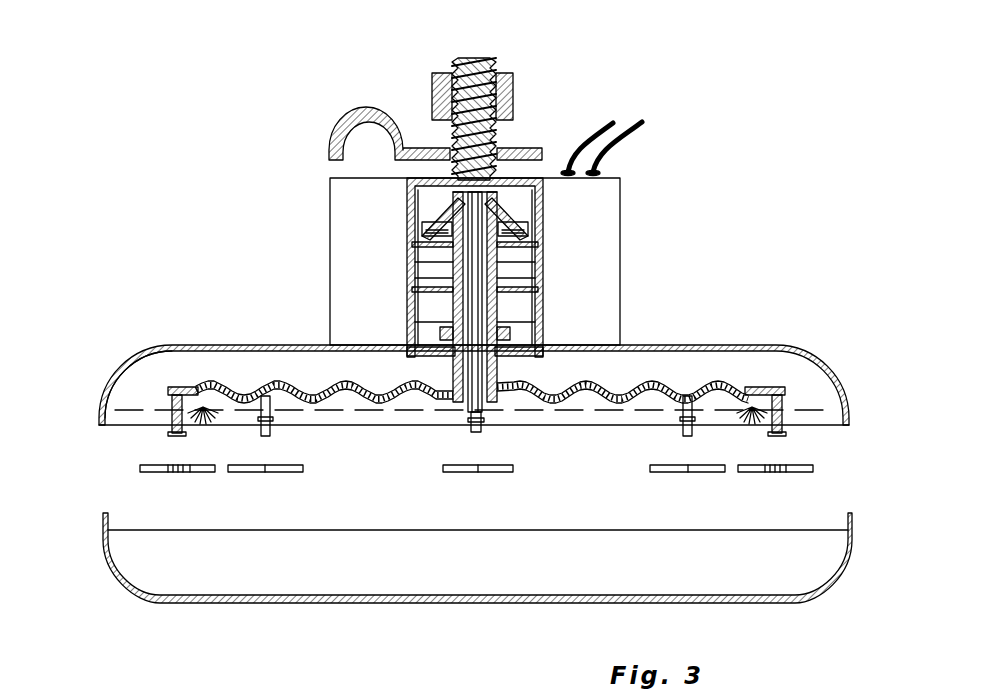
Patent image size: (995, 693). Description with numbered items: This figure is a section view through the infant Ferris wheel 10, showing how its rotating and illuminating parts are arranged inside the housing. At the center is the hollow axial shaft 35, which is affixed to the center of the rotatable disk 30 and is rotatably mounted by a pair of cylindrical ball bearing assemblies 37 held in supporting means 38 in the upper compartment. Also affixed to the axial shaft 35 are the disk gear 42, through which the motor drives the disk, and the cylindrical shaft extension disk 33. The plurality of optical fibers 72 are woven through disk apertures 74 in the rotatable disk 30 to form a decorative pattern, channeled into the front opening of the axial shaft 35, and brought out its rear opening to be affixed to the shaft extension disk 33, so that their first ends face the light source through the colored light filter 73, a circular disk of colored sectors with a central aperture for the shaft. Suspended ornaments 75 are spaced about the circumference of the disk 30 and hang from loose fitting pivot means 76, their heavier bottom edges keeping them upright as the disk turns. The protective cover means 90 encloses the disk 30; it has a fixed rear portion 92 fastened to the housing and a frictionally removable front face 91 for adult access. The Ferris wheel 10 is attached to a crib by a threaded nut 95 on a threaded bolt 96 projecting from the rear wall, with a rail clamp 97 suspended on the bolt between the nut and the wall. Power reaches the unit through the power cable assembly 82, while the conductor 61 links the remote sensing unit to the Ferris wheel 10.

The infant Ferris wheel 10 is at (158, 189).
The rotatable disk 30 is at (218, 386).
The cylindrical shaft extension disk 33 is at (407, 182).
The hollow axial shaft 35 is at (412, 244).
The cylindrical ball bearing assemblies 37 is at (415, 262).
The supporting means 38 is at (415, 283).
The disk gear 42 is at (440, 305).
The conductor 61 is at (598, 130).
The optical fibers 72 is at (448, 185).
The colored light filter 73 is at (425, 225).
The disk apertures 74 is at (413, 405).
The suspended ornaments 75 is at (255, 472).
The loose fitting pivot means 76 is at (265, 437).
The power cable assembly 82 is at (660, 126).
The protective cover means 90 is at (845, 362).
The frictionally removable front face 91 is at (836, 580).
The fixed rear portion 92 is at (118, 370).
The threaded nut 95 is at (513, 88).
The threaded bolt 96 is at (474, 58).
The rail clamp 97 is at (356, 108).